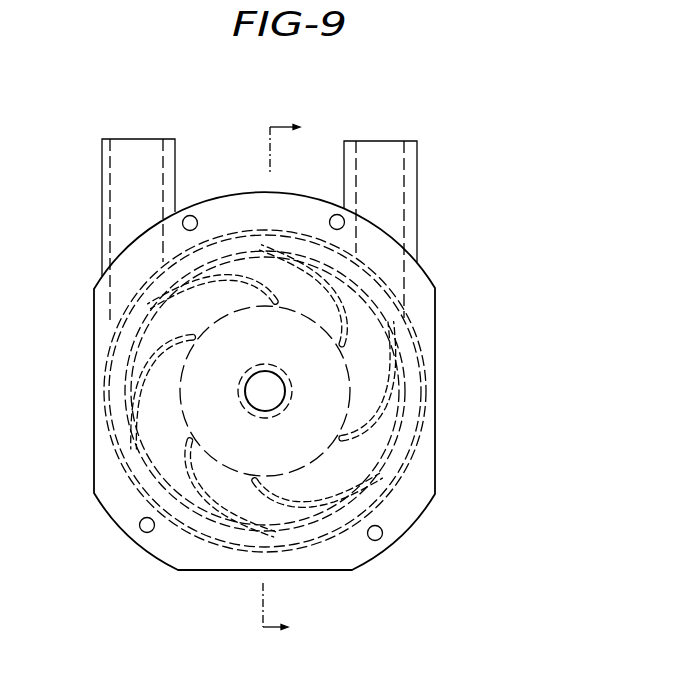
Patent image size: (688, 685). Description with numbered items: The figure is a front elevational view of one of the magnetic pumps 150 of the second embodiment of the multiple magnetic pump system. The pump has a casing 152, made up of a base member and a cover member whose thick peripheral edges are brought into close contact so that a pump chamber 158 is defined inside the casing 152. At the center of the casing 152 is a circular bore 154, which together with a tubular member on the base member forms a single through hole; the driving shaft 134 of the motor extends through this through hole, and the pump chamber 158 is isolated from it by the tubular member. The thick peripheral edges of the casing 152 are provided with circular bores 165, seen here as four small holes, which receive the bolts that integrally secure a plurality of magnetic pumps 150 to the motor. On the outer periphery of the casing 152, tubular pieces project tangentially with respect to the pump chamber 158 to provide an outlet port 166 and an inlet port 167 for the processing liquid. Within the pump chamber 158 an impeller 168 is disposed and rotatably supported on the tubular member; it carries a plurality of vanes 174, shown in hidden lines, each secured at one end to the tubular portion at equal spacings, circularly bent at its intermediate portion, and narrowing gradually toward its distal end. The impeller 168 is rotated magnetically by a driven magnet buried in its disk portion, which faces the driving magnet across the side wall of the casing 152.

The magnetic pump 150 is at (298, 364).
The casing 152 is at (437, 342).
The driving shaft 134 is at (285, 359).
The circular bore 154 is at (261, 399).
The pump chamber 158 is at (189, 423).
The impeller 168 is at (218, 424).
The vane 174 is at (377, 420).
The circular bore 165 is at (186, 226).
The outlet port 166 is at (353, 158).
The inlet port 167 is at (110, 156).